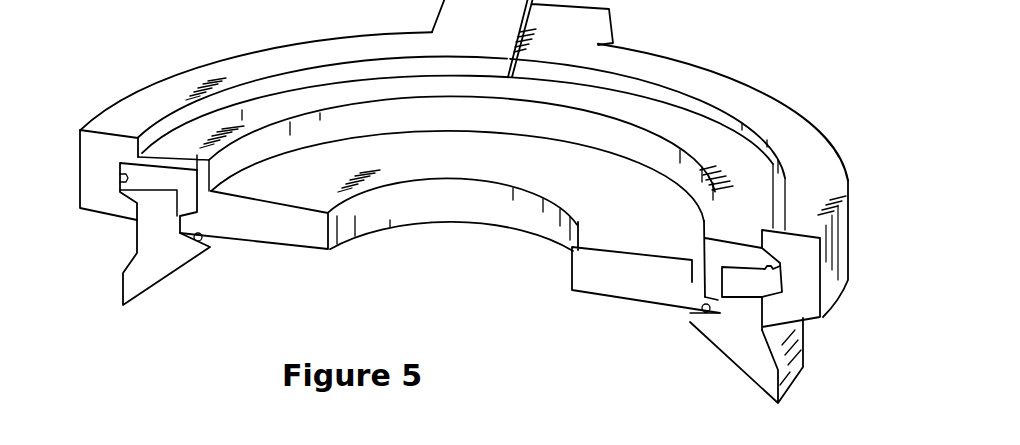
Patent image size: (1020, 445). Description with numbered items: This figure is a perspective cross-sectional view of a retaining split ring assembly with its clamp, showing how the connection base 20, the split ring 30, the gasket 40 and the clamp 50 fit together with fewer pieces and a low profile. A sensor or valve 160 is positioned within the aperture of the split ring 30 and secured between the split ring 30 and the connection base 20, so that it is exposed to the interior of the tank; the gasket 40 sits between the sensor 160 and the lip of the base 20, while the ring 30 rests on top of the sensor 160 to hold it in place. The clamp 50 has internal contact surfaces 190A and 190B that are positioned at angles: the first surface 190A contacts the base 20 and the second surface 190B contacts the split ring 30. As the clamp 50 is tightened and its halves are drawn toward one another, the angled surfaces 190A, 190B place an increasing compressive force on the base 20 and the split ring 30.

The connection base 20 is at (137, 283).
The split ring 30 is at (250, 108).
The gasket 40 is at (692, 330).
The clamp 50 is at (100, 183).
The sensor or valve 160 is at (265, 235).
The first internal contact surface 190A is at (773, 283).
The second internal contact surface 190B is at (768, 252).